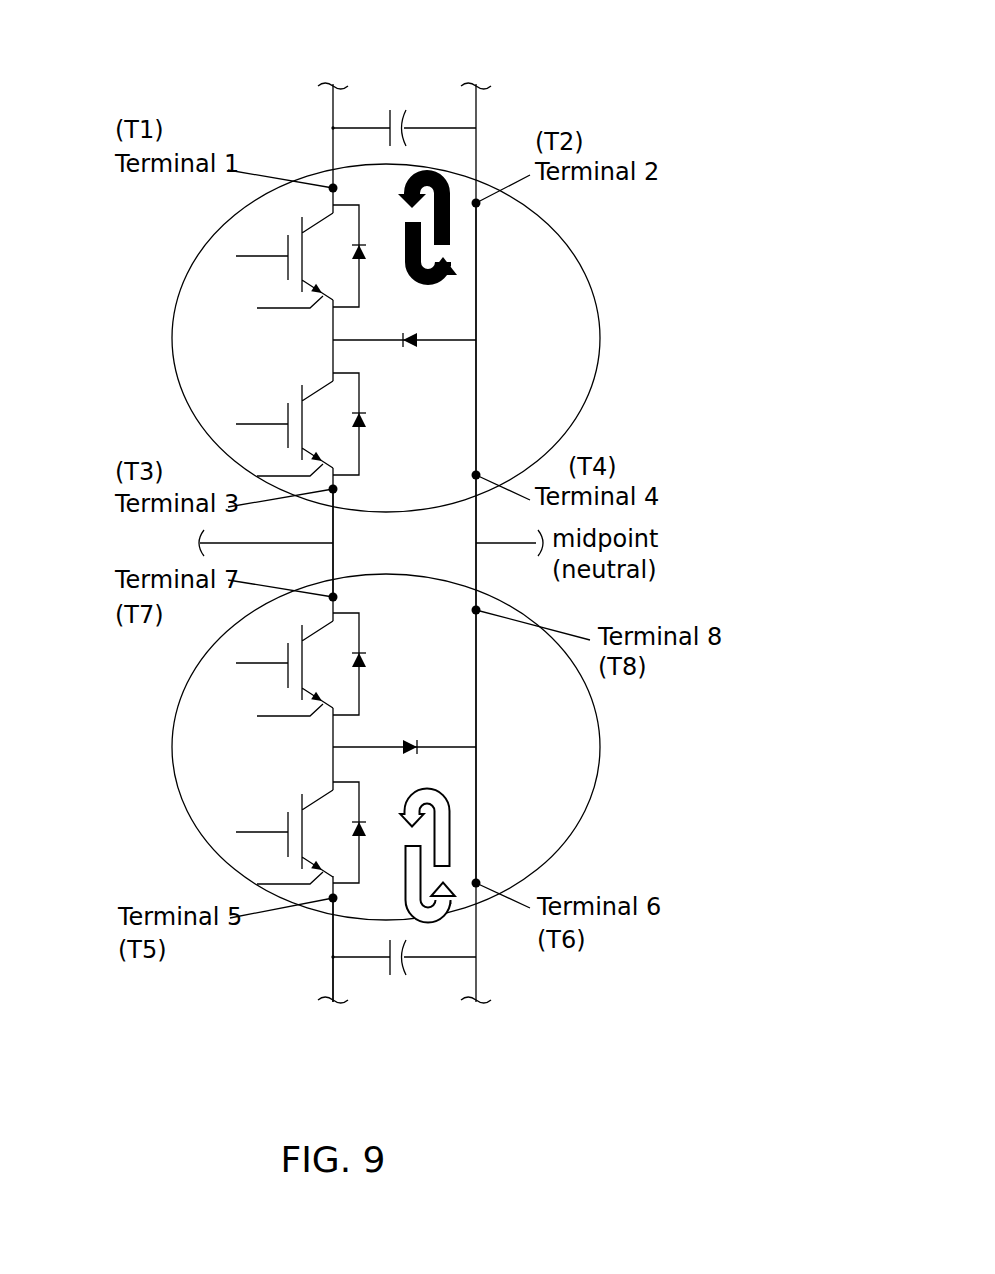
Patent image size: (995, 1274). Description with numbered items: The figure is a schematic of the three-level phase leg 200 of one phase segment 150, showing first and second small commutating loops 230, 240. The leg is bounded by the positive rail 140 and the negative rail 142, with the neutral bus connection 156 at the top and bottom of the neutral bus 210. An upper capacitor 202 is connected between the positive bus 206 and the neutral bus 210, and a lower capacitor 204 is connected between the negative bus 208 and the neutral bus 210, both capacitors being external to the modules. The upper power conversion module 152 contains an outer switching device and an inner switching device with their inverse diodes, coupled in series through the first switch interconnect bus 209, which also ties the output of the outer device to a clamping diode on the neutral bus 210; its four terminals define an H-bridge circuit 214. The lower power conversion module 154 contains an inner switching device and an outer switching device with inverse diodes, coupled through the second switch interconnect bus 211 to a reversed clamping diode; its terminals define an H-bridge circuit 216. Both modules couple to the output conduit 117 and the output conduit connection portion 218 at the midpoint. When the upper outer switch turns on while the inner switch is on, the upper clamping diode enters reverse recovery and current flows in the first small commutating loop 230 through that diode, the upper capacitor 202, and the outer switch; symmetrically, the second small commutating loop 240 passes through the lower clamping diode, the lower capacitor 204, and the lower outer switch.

The phase segment 150 is at (214, 70).
The three-level phase leg 200 is at (530, 50).
The positive rail 140 is at (333, 508).
The negative rail 142 is at (327, 984).
The neutral bus connection 156 is at (476, 542).
The upper capacitor 202 is at (403, 110).
The lower capacitor 204 is at (405, 975).
The positive bus 206 is at (333, 136).
The negative bus 208 is at (333, 975).
The power conversion module 152 is at (183, 272).
The power conversion module 154 is at (183, 683).
The H-bridge circuit 214 is at (297, 337).
The H-bridge circuit 216 is at (297, 746).
The first switch interconnect bus 209 is at (333, 358).
The second switch interconnect bus 211 is at (333, 765).
The neutral bus 210 is at (476, 385).
The output conduit connection portion 218 is at (333, 522).
The output conduit 117 is at (307, 543).
The first small commutating loop 230 is at (455, 253).
The second small commutating loop 240 is at (448, 876).